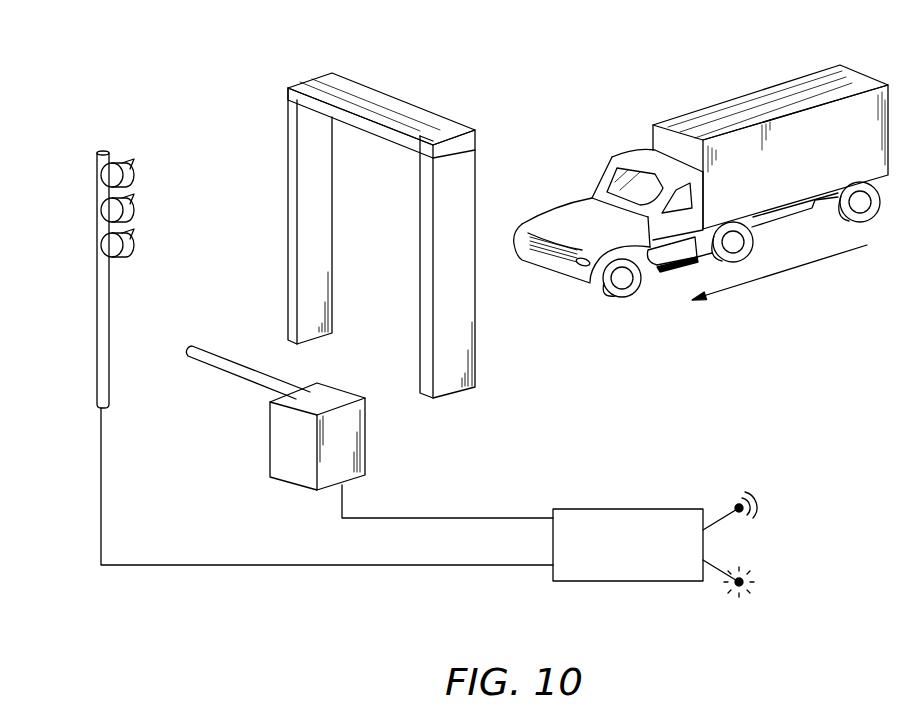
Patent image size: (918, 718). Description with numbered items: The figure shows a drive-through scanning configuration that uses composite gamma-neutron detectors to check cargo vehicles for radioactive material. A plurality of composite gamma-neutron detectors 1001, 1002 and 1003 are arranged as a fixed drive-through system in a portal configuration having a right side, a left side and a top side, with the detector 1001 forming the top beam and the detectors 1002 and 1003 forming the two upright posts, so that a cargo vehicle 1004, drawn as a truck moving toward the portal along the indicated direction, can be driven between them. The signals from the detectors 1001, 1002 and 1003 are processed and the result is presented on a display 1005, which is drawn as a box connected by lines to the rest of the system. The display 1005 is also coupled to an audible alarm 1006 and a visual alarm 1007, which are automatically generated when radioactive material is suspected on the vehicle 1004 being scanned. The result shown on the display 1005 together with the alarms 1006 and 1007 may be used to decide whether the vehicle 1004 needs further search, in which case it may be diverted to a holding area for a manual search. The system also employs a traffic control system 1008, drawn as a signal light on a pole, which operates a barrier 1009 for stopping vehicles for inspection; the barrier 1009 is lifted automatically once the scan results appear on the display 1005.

The composite gamma-neutron detector 1001 is at (353, 90).
The composite gamma-neutron detector 1002 is at (467, 295).
The composite gamma-neutron detector 1003 is at (323, 222).
The cargo vehicle 1004 is at (787, 82).
The display 1005 is at (610, 577).
The audible alarm 1006 is at (832, 509).
The visual alarm 1007 is at (832, 648).
The traffic control system 1008 is at (198, 308).
The barrier 1009 is at (272, 430).